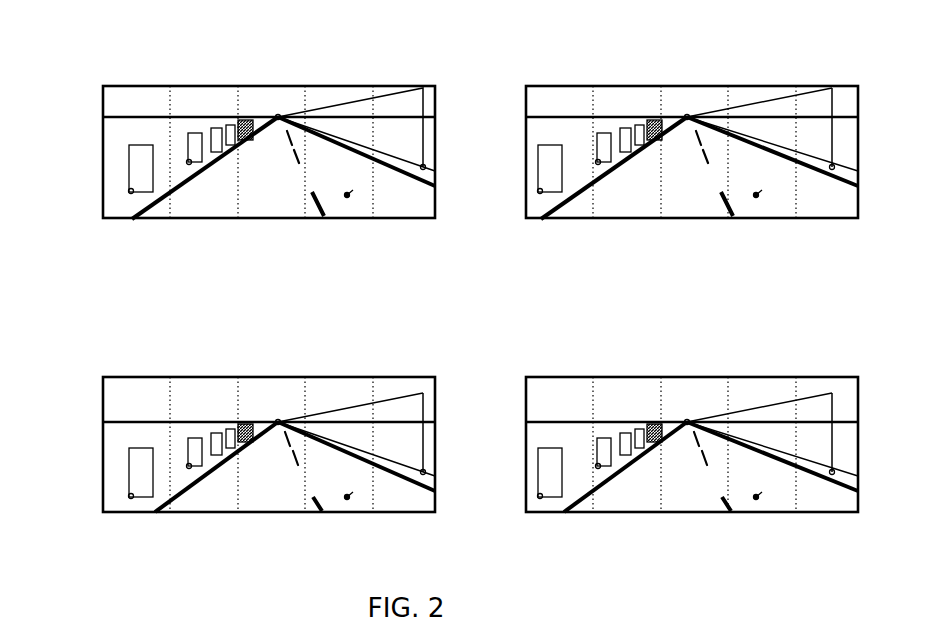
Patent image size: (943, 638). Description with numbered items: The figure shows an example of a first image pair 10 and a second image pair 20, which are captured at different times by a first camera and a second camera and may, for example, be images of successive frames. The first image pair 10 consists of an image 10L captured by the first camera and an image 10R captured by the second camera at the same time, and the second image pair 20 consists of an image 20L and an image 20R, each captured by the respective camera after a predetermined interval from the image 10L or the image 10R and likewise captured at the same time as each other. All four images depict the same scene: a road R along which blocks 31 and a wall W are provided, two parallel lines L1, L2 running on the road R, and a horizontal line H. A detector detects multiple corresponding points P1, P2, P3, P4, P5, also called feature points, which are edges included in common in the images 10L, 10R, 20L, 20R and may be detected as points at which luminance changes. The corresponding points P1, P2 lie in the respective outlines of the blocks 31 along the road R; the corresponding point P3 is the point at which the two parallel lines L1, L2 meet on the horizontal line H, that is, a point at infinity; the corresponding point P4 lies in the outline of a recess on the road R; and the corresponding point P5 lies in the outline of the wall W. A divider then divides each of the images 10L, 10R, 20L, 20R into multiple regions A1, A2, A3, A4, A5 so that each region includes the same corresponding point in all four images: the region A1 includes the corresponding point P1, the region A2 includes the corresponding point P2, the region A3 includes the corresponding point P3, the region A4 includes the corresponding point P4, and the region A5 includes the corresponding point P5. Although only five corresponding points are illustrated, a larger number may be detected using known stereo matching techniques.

The first image pair 10 is at (74, 152).
The image of the first image pair 10L is at (103, 86).
The image of the first image pair 10R is at (526, 86).
The second image pair 20 is at (74, 444).
The image of the second image pair 20L is at (103, 377).
The image of the second image pair 20R is at (526, 377).
The horizontal line H is at (126, 112).
The blocks 31 is at (192, 133).
The wall W is at (356, 112).
The road R is at (277, 203).
The parallel line L1 is at (140, 203).
The parallel line L2 is at (389, 152).
The corresponding point P1 is at (128, 192).
The corresponding point P2 is at (187, 165).
The corresponding point P3 is at (279, 116).
The corresponding point P4 is at (347, 198).
The corresponding point P5 is at (423, 170).
The region A1 is at (577, 86).
The region A2 is at (643, 86).
The region A3 is at (708, 86).
The region A4 is at (777, 86).
The region A5 is at (843, 86).